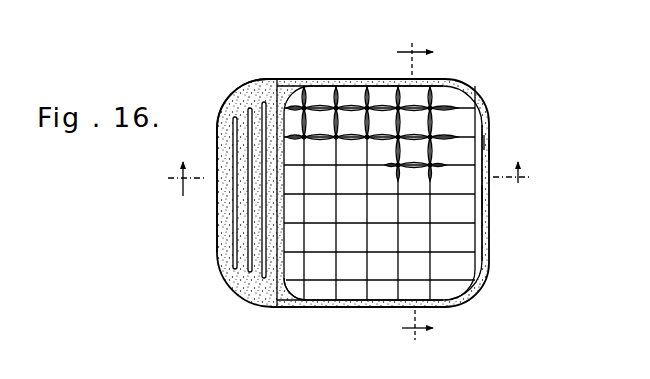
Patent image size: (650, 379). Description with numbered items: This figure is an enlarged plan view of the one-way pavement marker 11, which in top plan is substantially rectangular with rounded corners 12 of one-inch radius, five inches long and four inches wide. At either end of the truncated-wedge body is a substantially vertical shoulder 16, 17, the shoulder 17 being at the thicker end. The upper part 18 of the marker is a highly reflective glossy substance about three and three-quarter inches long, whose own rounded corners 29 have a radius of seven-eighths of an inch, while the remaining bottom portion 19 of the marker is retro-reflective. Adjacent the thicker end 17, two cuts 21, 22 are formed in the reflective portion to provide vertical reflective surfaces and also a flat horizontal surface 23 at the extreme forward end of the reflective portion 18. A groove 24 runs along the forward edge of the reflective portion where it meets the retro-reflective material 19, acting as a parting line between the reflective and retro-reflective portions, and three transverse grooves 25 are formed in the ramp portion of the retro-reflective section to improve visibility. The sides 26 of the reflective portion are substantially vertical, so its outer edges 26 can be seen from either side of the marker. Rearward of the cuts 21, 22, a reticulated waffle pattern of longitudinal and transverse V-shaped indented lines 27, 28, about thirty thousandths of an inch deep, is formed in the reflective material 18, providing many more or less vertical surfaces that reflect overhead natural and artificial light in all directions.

The marker 11 is at (365, 76).
The rounded corners 12 is at (474, 105).
The vertical shoulder 16 is at (218, 238).
The vertical shoulder at thicker end 17 is at (511, 225).
The upper reflective part 18 is at (423, 157).
The retro-reflective bottom portion 19 is at (285, 294).
The cut 21 is at (483, 142).
The cut 22 is at (487, 152).
The flat horizontal surface 23 is at (487, 197).
The groove 24 is at (283, 184).
The transverse grooves 25 is at (263, 112).
The sides 26 is at (356, 328).
The longitudinal V-shaped indented lines 27 is at (416, 133).
The transverse V-shaped indented lines 28 is at (442, 227).
The rounded corners of glossy part 29 is at (299, 86).